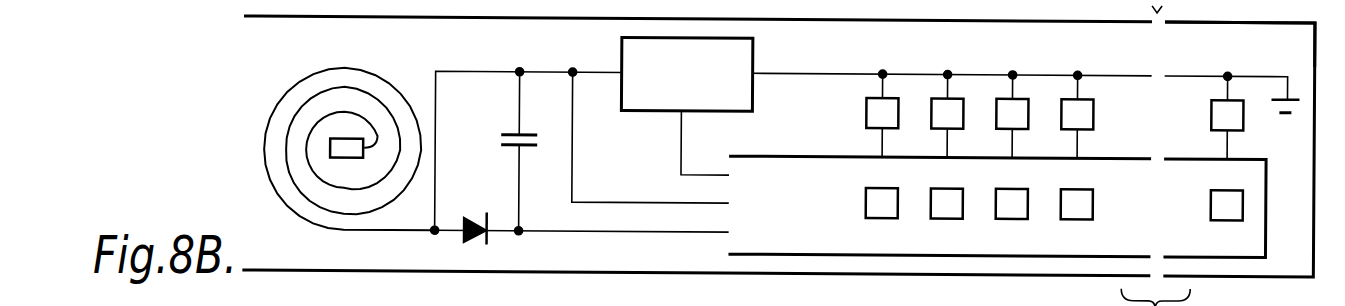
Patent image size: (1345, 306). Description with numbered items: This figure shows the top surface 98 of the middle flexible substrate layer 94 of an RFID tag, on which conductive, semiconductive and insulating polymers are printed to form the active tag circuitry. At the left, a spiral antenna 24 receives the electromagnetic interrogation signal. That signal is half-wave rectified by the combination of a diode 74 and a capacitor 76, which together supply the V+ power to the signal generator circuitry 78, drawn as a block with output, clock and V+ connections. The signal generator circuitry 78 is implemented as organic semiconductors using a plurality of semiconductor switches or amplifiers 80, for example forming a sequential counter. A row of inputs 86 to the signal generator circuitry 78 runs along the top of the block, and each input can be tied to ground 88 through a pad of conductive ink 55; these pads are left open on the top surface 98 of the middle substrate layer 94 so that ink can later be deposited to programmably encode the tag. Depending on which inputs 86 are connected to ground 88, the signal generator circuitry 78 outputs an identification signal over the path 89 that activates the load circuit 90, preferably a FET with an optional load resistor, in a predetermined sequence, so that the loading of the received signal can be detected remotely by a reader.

The antenna 24 is at (367, 67).
The conductive ink 55 is at (1222, 104).
The diode 74 is at (497, 218).
The capacitor 76 is at (515, 132).
The signal generator circuitry 78 is at (785, 152).
The semiconductor switches or amplifiers 80 is at (878, 186).
The inputs 86 is at (1296, 108).
The ground 88 is at (1298, 93).
The path 89 is at (682, 141).
The load circuit 90 is at (753, 96).
The middle flexible substrate layer 94 is at (244, 40).
The top surface 98 is at (1210, 40).